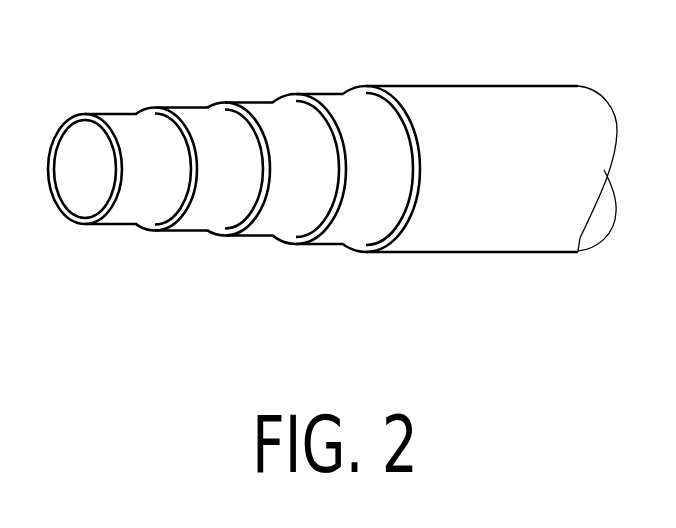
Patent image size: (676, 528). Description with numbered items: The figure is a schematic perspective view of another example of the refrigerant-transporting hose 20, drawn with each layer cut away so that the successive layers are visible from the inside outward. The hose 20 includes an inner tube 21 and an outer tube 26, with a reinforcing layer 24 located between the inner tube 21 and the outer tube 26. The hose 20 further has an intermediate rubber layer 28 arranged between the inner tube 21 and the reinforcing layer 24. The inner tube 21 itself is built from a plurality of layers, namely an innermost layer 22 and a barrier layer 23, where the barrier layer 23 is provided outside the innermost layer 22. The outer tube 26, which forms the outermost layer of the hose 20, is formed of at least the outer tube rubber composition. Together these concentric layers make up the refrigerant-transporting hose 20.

The refrigerant-transporting hose 20 is at (332, 183).
The inner tube 21 is at (131, 235).
The innermost layer 22 is at (129, 215).
The barrier layer 23 is at (107, 311).
The intermediate rubber layer 28 is at (287, 220).
The reinforcing layer 24 is at (359, 222).
The outer tube 26 is at (493, 225).